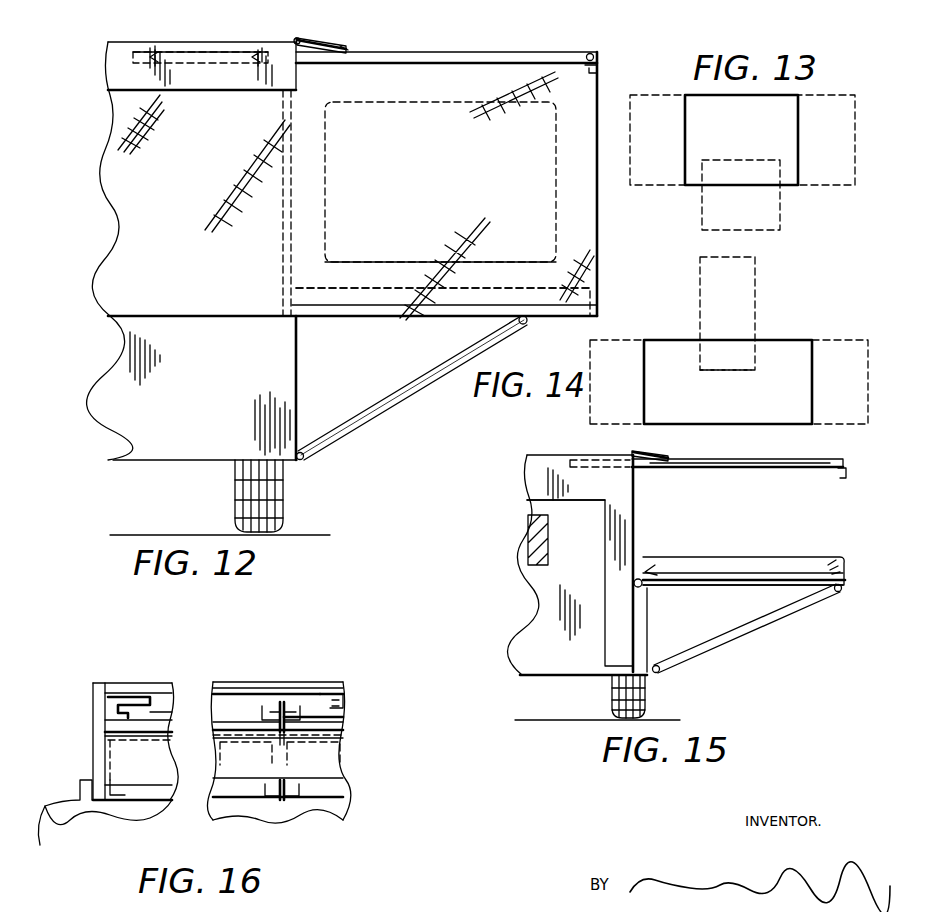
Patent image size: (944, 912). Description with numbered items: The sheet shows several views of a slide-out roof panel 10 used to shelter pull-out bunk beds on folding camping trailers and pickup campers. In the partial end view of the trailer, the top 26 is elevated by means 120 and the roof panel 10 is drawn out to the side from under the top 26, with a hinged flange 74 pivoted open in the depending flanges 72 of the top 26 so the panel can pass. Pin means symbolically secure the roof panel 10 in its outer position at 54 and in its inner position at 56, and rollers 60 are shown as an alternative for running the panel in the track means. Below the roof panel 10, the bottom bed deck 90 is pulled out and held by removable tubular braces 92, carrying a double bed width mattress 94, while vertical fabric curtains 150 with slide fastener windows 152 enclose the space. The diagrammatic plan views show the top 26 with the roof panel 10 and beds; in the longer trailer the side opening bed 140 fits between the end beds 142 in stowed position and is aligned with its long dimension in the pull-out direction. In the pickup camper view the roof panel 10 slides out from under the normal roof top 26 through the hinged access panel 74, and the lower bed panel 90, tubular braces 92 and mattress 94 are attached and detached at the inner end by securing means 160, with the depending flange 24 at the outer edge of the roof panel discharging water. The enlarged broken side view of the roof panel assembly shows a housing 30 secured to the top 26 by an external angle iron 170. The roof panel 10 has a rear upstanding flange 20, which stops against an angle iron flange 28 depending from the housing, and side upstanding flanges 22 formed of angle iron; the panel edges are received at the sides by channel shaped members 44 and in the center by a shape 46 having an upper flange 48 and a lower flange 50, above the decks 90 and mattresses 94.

In FIG. 12, the roof panel 10 is at (582, 68).
In FIG. 13, the roof panel 10 is at (770, 222).
In FIG. 14, the roof panel 10 is at (740, 307).
In FIG. 15, the roof panel 10 is at (790, 468).
In FIG. 16, the roof panel 10 is at (215, 706).
In FIG. 16, the rear upstanding marginal flange 20 is at (140, 712).
In FIG. 12, the side upstanding marginal flanges 22 is at (520, 52).
In FIG. 15, the side upstanding marginal flanges 22 is at (785, 459).
In FIG. 16, the side upstanding marginal flanges 22 is at (115, 715).
In FIG. 12, the depending flange 24 is at (600, 70).
In FIG. 15, the depending flange 24 is at (846, 474).
In FIG. 16, the depending flange 24 is at (138, 736).
In FIG. 12, the top 26 is at (248, 40).
In FIG. 13, the top 26 is at (753, 122).
In FIG. 14, the top 26 is at (686, 373).
In FIG. 15, the top 26 is at (566, 455).
In FIG. 16, the top 26 is at (283, 659).
In FIG. 16, the angle iron flange 28 is at (338, 703).
In FIG. 16, the housing 30 is at (112, 684).
In FIG. 16, the channel shaped members 44 is at (104, 683).
In FIG. 16, the shape 46 is at (300, 717).
In FIG. 16, the upper flange 48 is at (310, 700).
In FIG. 16, the lower flange 50 is at (280, 752).
In FIG. 12, the means to secure roof panel in outer position 54 is at (312, 42).
In FIG. 12, the means to secure roof panel in inner position 56 is at (594, 56).
In FIG. 12, the rollers 60 is at (176, 48).
In FIG. 12, the depending flanges 72 is at (204, 52).
In FIG. 15, the depending flanges 72 is at (532, 472).
In FIG. 12, the hinged flange 74 is at (350, 46).
In FIG. 15, the hinged flange 74 is at (668, 456).
In FIG. 12, the bottom bed supporting panel or deck 90 is at (418, 320).
In FIG. 15, the bottom bed supporting panel or deck 90 is at (700, 586).
In FIG. 16, the bottom bed supporting panel or deck 90 is at (138, 792).
In FIG. 12, the removable tubular braces 92 is at (388, 408).
In FIG. 15, the removable tubular braces 92 is at (745, 636).
In FIG. 12, the mattresses 94 is at (437, 314).
In FIG. 15, the mattresses 94 is at (750, 565).
In FIG. 16, the mattresses 94 is at (156, 776).
In FIG. 12, the means to elevate top 120 is at (298, 205).
In FIG. 14, the side opening bed 140 is at (738, 362).
In FIG. 14, the end beds 142 is at (614, 366).
In FIG. 12, the vertical fabric curtains 150 is at (410, 80).
In FIG. 12, the slide fastener windows 152 is at (555, 143).
In FIG. 15, the means to secure inner end of lower bed deck 160 is at (638, 578).
In FIG. 16, the external angle iron 170 is at (78, 790).